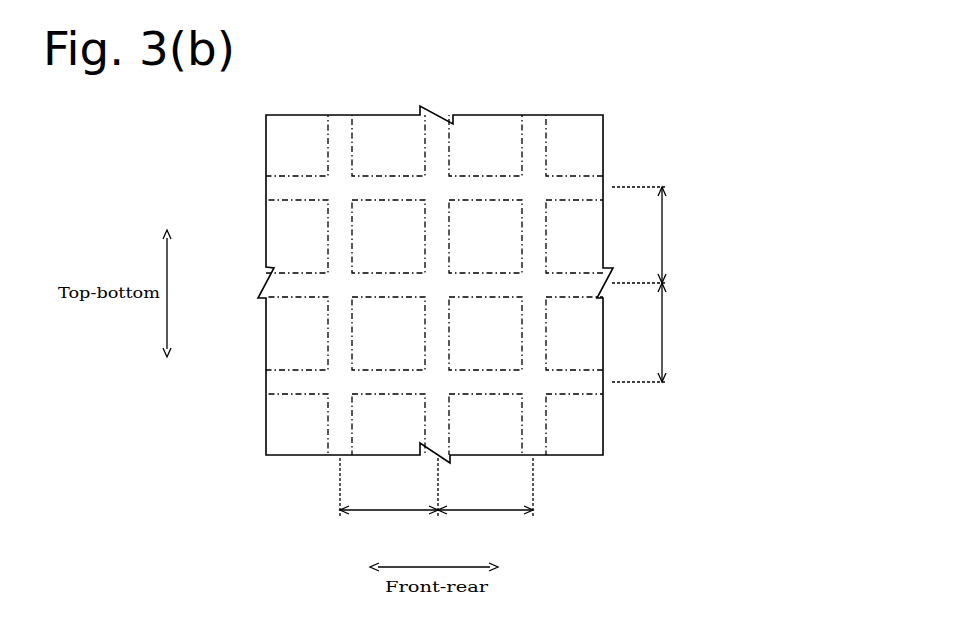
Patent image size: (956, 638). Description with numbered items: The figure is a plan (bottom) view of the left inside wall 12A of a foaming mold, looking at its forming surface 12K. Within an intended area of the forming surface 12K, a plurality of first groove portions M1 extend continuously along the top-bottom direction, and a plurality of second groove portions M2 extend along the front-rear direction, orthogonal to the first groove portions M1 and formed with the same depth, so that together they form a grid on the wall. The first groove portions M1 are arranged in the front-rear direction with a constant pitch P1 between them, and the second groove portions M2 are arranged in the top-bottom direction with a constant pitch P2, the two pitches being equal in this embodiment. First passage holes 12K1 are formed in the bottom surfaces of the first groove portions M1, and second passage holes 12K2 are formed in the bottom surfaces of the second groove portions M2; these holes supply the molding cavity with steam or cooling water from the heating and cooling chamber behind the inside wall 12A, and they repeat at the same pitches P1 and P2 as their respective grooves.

The left inside wall 12A is at (603, 143).
The forming surface 12K is at (388, 380).
The first passage holes 12K1 is at (437, 233).
The second passage holes 12K2 is at (484, 184).
The first groove portions M1 is at (422, 142).
The second groove portions M2 is at (300, 176).
The pitch P1 is at (436, 496).
The pitch P2 is at (650, 284).